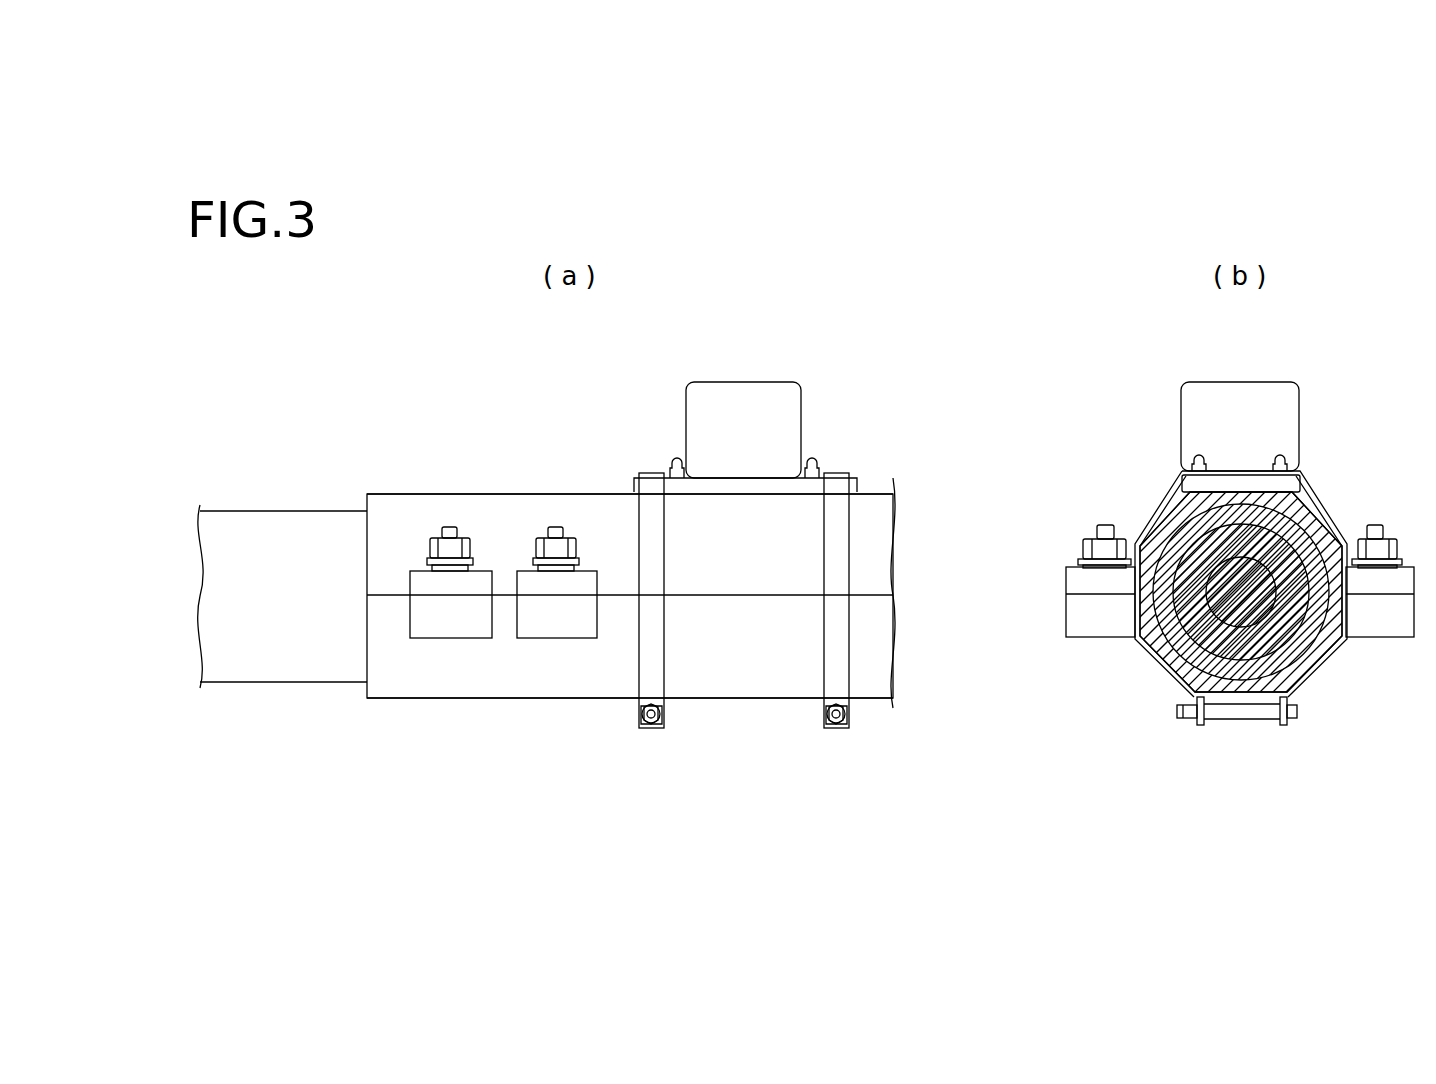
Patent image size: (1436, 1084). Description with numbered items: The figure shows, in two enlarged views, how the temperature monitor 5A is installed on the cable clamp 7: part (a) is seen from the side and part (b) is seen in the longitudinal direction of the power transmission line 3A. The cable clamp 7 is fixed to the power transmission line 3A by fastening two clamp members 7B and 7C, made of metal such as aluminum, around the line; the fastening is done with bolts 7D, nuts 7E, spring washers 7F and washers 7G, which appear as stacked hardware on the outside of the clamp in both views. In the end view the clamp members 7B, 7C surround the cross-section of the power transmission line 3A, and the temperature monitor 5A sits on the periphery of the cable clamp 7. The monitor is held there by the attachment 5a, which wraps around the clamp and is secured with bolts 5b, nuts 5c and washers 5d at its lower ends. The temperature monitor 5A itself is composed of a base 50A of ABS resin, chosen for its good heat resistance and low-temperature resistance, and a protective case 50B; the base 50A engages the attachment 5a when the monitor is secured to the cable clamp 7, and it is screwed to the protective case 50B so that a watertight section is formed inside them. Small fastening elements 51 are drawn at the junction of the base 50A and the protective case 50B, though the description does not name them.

The power transmission line 3A is at (292, 523).
The cable clamp 7 is at (398, 492).
The clamp member 7B is at (393, 513).
The clamp member 7C is at (397, 684).
The bolt 7D is at (452, 526).
The nut 7E is at (468, 545).
The spring washer 7F is at (425, 563).
The washer 7G is at (474, 567).
The temperature monitor 5A is at (688, 383).
The base 50A is at (742, 485).
The protective case 50B is at (780, 382).
The fixing bolt 51 is at (676, 457).
The attachment 5a is at (654, 641).
The bolt 5b is at (640, 720).
The nut 5c is at (650, 725).
The washer 5d is at (668, 720).